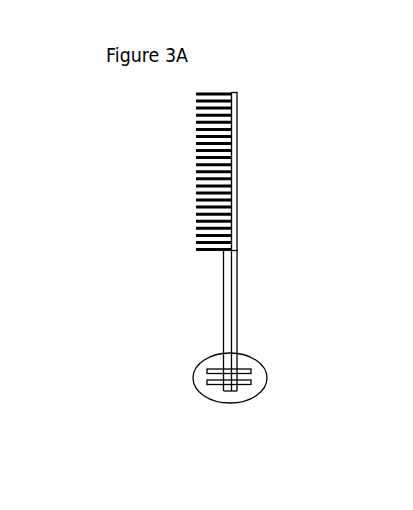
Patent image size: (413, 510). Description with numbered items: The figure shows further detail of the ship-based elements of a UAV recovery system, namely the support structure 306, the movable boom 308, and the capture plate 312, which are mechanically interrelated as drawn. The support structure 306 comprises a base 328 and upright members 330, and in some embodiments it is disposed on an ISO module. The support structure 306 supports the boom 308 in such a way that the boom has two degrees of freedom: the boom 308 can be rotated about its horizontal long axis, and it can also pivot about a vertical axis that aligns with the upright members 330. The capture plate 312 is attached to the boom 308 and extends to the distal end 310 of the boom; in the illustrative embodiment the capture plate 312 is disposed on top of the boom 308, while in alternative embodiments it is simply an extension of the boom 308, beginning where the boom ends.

The support structure 306 is at (247, 381).
The movable boom 308 is at (232, 269).
The distal end 310 is at (237, 93).
The capture plate 312 is at (172, 175).
The base 328 is at (258, 378).
The upright member 330 is at (209, 369).